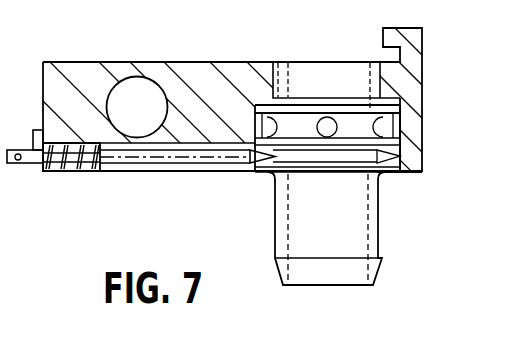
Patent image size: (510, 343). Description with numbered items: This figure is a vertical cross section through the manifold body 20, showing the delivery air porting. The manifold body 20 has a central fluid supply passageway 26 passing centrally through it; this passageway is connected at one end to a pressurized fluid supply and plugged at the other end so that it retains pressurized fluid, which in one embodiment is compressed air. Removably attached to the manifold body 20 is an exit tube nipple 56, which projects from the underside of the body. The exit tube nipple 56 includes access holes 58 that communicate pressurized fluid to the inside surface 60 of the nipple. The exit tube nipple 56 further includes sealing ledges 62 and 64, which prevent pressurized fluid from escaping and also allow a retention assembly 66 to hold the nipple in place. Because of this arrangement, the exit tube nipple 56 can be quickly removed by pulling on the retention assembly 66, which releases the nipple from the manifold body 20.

The manifold body 20 is at (116, 58).
The central fluid supply passageway 26 is at (138, 77).
The access holes 58 is at (372, 110).
The sealing ledge 62 is at (419, 140).
The sealing ledge 64 is at (400, 172).
The exit tube nipple 56 is at (386, 258).
The inside surface 60 is at (410, 238).
The retention assembly 66 is at (33, 164).